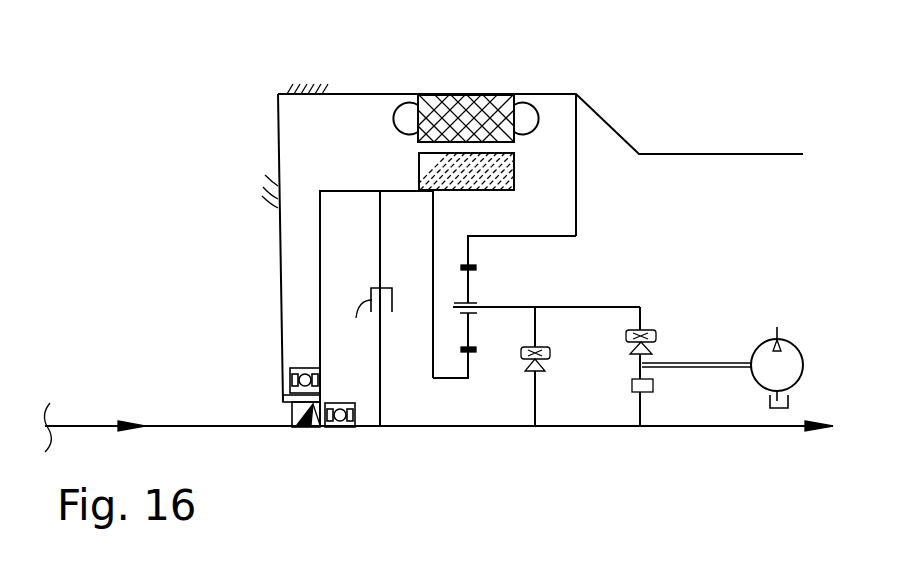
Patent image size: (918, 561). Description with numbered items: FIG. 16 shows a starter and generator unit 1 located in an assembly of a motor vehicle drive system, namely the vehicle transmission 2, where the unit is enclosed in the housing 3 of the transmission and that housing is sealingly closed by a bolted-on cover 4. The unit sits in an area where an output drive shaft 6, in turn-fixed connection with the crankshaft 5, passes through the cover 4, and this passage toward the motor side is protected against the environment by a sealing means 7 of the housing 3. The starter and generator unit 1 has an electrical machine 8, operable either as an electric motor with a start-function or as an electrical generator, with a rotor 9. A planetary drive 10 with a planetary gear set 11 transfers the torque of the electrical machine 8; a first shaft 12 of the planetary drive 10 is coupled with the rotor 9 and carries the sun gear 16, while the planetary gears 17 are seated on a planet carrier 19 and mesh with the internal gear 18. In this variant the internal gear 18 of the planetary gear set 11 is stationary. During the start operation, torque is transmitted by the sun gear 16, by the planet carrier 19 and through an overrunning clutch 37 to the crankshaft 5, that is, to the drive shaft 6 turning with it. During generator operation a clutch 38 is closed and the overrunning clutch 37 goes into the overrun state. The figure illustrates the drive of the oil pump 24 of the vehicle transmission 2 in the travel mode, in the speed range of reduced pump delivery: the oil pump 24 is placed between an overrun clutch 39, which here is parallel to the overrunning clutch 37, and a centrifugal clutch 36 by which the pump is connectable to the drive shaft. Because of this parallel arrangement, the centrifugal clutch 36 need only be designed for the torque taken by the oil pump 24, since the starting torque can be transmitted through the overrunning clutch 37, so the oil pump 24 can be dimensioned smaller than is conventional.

The starter and generator unit 1 is at (421, 88).
The vehicle transmission 2 is at (788, 301).
The housing 3 is at (620, 130).
The cover 4 is at (278, 151).
The crankshaft 5 is at (73, 429).
The output drive shaft 6 is at (407, 428).
The sealing means 7 is at (316, 428).
The electrical machine 8 is at (474, 120).
The rotor 9 is at (515, 163).
The planetary drive 10 is at (592, 222).
The planetary gear set 11 is at (480, 283).
The first shaft 12 is at (366, 190).
The sun gear 16 is at (470, 366).
The planetary gears 17 is at (471, 318).
The internal gear 18 is at (465, 246).
The planet carrier 19 is at (527, 307).
The oil pump 24 is at (799, 363).
The centrifugal clutch 36 is at (656, 386).
The overrunning clutch 37 is at (549, 355).
The clutch 38 is at (360, 325).
The overrun clutch 39 is at (656, 330).